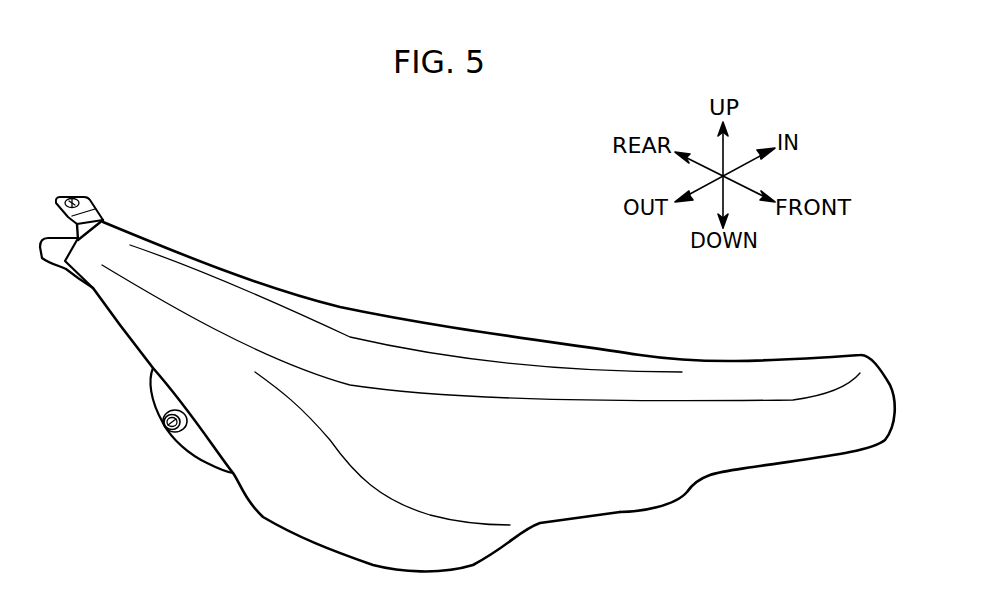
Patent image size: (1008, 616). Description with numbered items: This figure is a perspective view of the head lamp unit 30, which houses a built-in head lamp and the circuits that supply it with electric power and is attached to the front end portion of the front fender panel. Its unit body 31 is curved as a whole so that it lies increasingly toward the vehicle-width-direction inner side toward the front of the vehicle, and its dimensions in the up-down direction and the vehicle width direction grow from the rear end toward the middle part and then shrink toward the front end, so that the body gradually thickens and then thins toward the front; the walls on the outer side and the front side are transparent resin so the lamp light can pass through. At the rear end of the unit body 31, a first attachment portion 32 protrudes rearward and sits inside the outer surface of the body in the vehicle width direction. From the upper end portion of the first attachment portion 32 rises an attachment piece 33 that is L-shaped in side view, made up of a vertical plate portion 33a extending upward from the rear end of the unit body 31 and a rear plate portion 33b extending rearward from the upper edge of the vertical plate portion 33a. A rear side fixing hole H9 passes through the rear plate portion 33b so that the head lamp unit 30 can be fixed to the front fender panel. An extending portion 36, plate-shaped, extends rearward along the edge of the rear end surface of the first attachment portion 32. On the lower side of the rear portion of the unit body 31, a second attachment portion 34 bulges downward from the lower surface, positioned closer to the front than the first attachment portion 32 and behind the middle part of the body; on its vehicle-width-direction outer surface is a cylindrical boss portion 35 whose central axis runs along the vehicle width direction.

The head lamp unit 30 is at (513, 279).
The unit body 31 is at (428, 320).
The first attachment portion 32 is at (86, 280).
The attachment piece 33 is at (186, 144).
The vertical plate portion 33a is at (100, 218).
The rear plate portion 33b is at (90, 200).
The second attachment portion 34 is at (193, 463).
The boss portion 35 is at (160, 424).
The extending portion 36 is at (36, 255).
The rear side fixing hole H9 is at (70, 196).